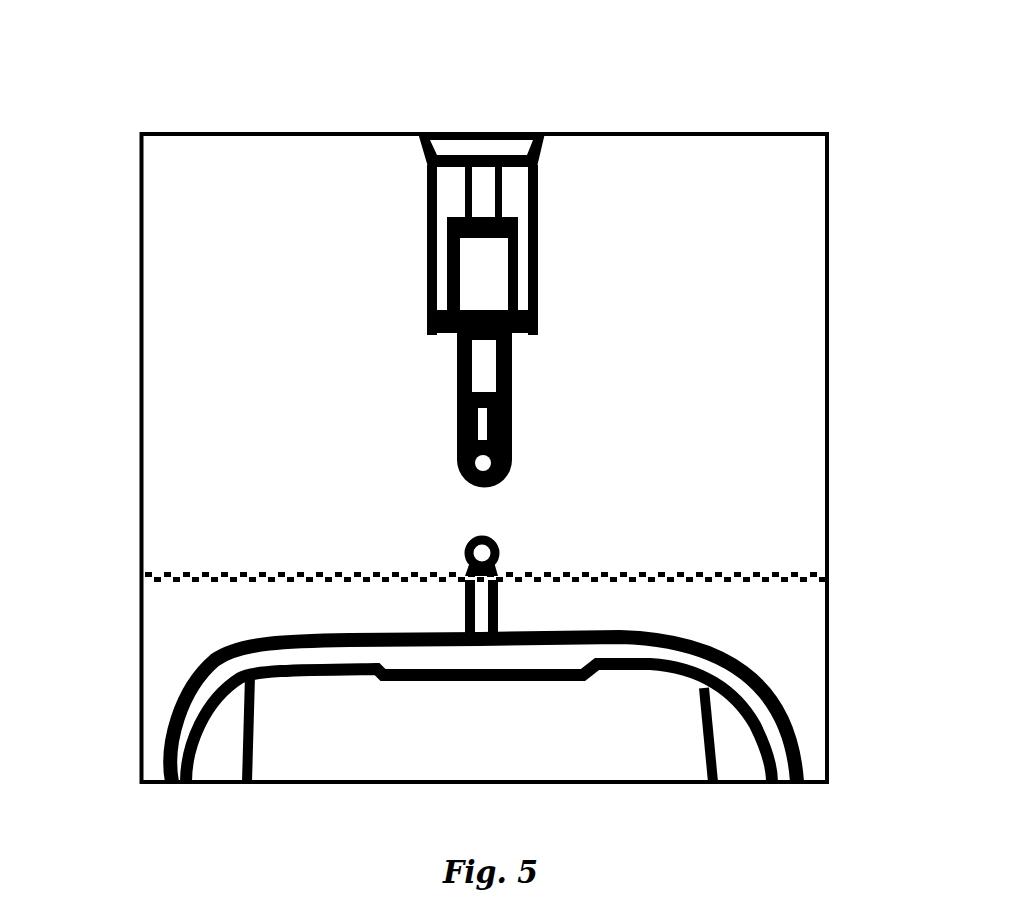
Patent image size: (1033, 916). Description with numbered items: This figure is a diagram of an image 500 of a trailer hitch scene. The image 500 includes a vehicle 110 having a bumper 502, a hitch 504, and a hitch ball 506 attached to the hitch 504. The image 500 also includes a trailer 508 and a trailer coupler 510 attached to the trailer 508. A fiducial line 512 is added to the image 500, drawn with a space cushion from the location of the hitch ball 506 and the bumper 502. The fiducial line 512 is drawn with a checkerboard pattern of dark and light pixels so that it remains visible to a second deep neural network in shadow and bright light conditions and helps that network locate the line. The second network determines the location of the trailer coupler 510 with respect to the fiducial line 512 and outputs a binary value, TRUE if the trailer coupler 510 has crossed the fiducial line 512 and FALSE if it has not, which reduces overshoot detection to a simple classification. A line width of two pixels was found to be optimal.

The image 500 is at (263, 133).
The bumper 502 is at (275, 643).
The hitch 504 is at (498, 617).
The hitch ball 506 is at (500, 553).
The trailer 508 is at (382, 268).
The trailer coupler 510 is at (457, 463).
The fiducial line 512 is at (288, 572).
The vehicle 110 is at (427, 751).